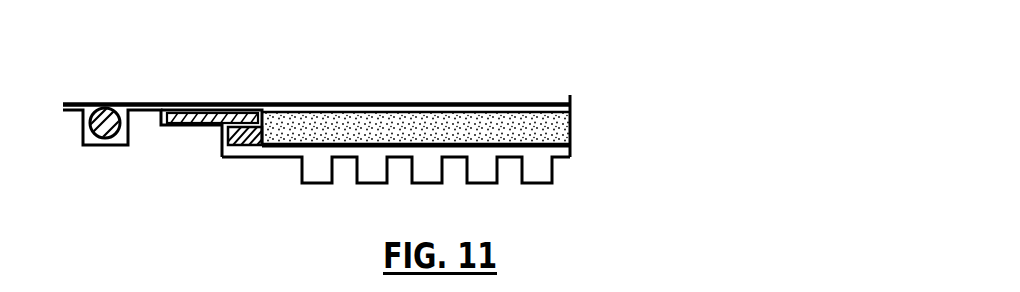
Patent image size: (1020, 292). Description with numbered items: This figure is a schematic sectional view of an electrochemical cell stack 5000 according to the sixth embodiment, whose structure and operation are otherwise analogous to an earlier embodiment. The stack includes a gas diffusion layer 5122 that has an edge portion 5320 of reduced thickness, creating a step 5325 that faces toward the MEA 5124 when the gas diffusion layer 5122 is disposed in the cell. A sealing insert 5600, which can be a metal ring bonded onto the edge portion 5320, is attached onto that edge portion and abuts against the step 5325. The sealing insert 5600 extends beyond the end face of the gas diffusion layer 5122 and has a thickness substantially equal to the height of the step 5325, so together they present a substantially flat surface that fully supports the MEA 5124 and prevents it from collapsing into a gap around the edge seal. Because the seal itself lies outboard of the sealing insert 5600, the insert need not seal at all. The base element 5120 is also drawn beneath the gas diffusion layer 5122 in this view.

The electrochemical cell stack 5000 is at (605, 120).
The ribbed base plate 5120 is at (553, 160).
The gas diffusion layer 5122 is at (572, 143).
The MEA 5124 is at (430, 103).
The edge portion 5320 is at (250, 150).
The step 5325 is at (262, 108).
The sealing insert 5600 is at (190, 110).